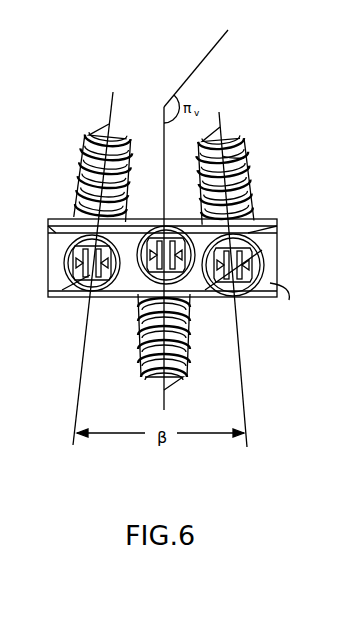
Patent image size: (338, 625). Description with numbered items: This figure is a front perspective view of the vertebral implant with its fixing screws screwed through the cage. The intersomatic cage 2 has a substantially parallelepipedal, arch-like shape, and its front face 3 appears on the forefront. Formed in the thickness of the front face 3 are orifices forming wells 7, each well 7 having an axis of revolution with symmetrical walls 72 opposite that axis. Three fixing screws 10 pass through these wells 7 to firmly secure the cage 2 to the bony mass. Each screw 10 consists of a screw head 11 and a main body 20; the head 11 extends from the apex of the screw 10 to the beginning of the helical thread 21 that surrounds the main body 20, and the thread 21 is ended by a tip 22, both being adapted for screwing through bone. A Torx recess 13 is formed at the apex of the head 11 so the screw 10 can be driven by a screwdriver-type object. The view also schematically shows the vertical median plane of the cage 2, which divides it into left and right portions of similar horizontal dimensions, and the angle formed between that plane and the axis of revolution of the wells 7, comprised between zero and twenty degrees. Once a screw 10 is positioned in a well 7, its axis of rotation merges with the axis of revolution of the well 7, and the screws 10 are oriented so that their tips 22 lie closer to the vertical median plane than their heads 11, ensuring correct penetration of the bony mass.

The intersomatic cage 2 is at (46, 244).
The front face 3 is at (133, 280).
The well 7 is at (250, 300).
The fixing screw 10 is at (72, 158).
The screw head 11 is at (70, 269).
The recess 13 is at (88, 281).
The main body 20 is at (252, 178).
The helical thread 21 is at (241, 160).
The tip 22 is at (221, 127).
The walls 72 is at (274, 299).